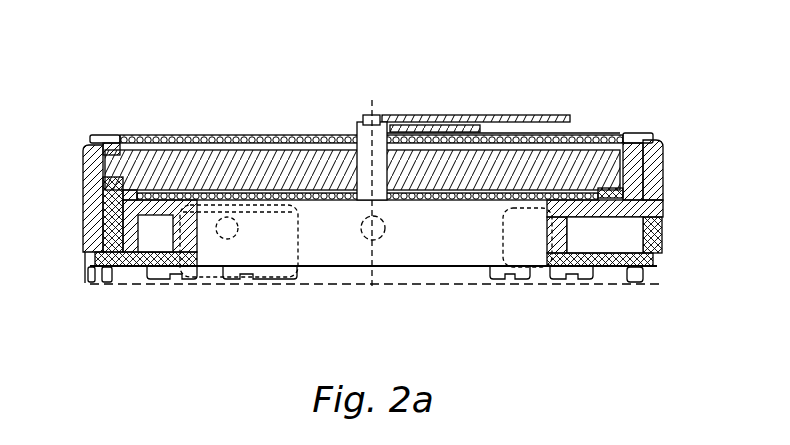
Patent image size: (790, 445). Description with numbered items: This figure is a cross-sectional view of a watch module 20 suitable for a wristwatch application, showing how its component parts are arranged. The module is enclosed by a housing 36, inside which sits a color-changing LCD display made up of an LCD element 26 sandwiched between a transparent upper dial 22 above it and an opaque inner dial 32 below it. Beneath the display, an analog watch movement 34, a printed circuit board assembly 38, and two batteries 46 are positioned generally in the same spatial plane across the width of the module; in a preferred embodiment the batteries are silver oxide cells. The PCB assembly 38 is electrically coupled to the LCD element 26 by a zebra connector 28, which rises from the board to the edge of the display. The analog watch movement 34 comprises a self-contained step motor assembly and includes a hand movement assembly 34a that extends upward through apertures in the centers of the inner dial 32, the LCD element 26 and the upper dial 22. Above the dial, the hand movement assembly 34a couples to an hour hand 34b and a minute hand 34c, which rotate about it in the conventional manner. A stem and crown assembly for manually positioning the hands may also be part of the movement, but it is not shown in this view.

The watch module 20 is at (150, 58).
The transparent upper dial 22 is at (220, 134).
The LCD element 26 is at (561, 171).
The zebra connector 28 is at (100, 217).
The opaque inner dial 32 is at (633, 206).
The analog watch movement 34 is at (337, 216).
The hand movement assembly 34a is at (367, 141).
The hour hand 34b is at (454, 130).
The minute hand 34c is at (460, 117).
The housing 36 is at (97, 190).
The printed circuit board assembly 38 is at (140, 258).
The batteries 46 is at (364, 293).